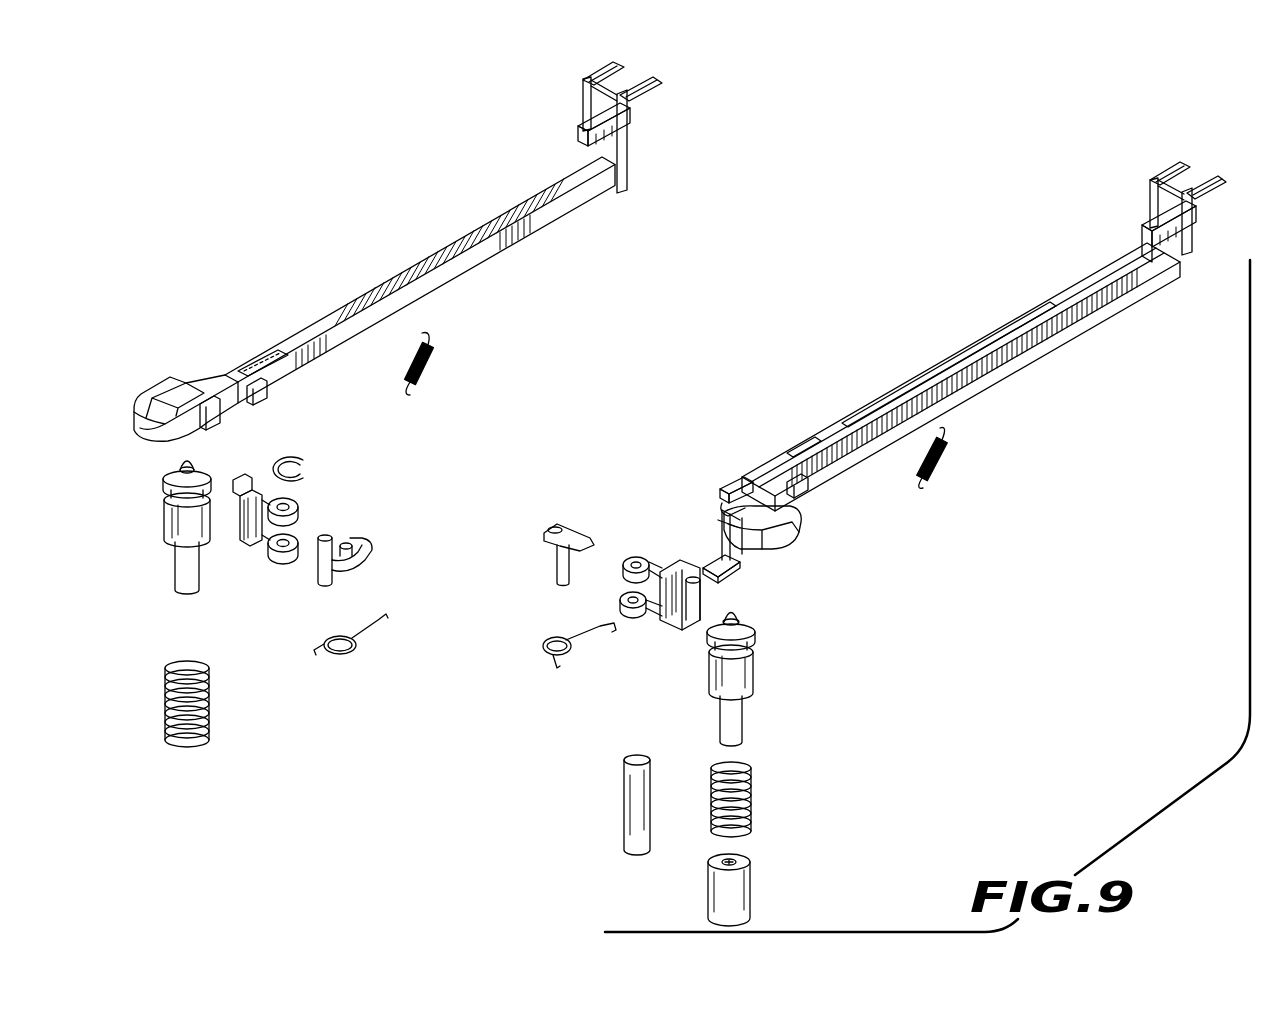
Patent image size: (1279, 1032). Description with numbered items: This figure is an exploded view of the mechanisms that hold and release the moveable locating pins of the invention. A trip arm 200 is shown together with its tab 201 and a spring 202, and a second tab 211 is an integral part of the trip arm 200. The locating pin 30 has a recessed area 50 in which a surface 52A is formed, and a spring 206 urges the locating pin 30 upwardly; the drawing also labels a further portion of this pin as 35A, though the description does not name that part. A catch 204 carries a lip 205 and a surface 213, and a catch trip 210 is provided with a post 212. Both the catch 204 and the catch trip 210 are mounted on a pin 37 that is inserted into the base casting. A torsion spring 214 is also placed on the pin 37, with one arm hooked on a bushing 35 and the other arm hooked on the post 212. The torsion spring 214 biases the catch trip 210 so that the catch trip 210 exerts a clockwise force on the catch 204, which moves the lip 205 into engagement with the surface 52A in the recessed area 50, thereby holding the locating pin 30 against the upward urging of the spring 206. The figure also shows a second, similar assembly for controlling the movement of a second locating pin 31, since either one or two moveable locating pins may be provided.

The trip arm 200 is at (1069, 330).
The tab 201 is at (1152, 205).
The spring 202 is at (946, 442).
The catch 204 is at (707, 598).
The lip 205 is at (655, 595).
The spring 206 is at (754, 792).
The catch trip 210 is at (530, 572).
The tab 211 is at (735, 482).
The post 212 is at (545, 542).
The surface 213 is at (648, 612).
The torsion spring 214 is at (580, 640).
The locating pin 30 is at (730, 672).
The locating pin 31 is at (178, 461).
The bushing 35 is at (751, 890).
The pin body 35A is at (757, 676).
The pin 37 is at (624, 792).
The recessed area 50 is at (757, 652).
The surface 52A is at (712, 660).